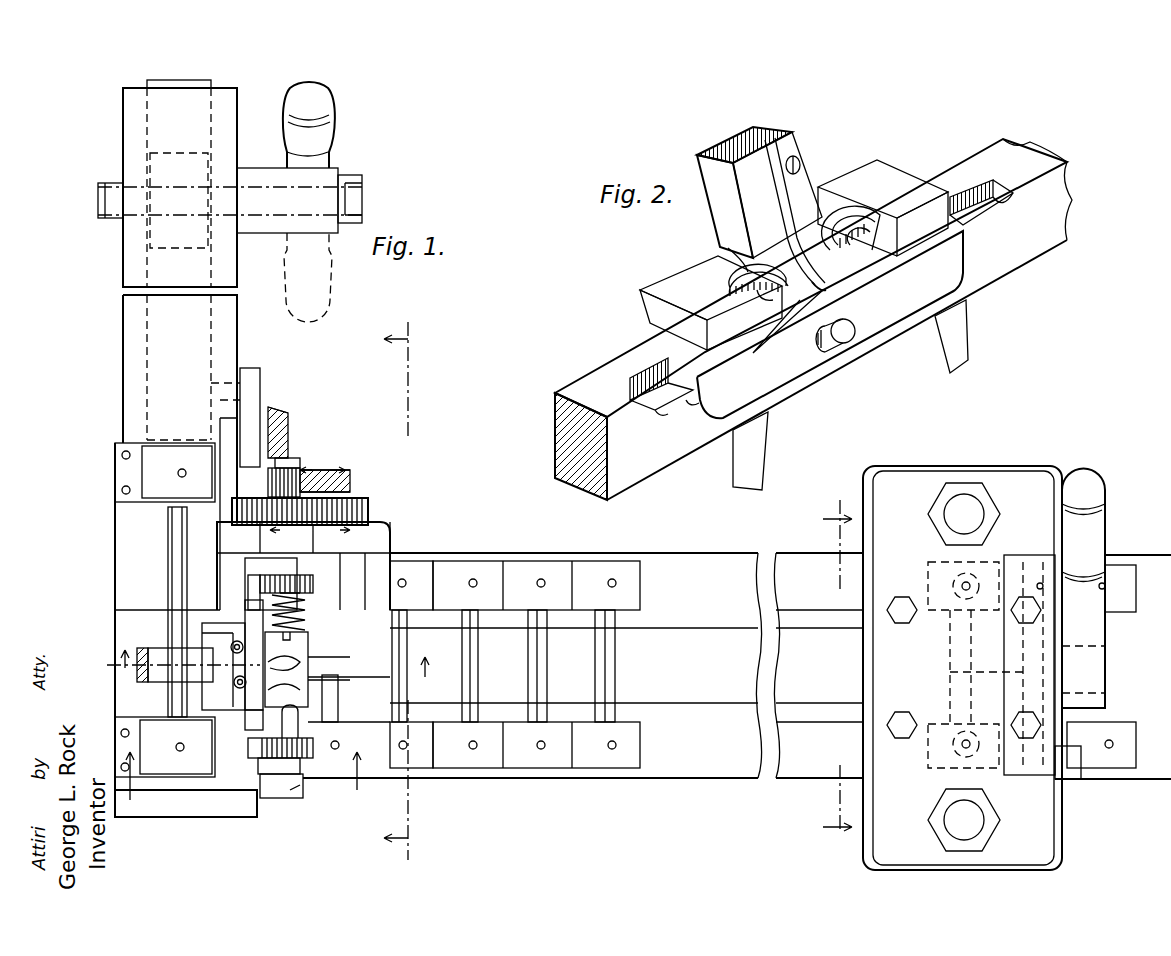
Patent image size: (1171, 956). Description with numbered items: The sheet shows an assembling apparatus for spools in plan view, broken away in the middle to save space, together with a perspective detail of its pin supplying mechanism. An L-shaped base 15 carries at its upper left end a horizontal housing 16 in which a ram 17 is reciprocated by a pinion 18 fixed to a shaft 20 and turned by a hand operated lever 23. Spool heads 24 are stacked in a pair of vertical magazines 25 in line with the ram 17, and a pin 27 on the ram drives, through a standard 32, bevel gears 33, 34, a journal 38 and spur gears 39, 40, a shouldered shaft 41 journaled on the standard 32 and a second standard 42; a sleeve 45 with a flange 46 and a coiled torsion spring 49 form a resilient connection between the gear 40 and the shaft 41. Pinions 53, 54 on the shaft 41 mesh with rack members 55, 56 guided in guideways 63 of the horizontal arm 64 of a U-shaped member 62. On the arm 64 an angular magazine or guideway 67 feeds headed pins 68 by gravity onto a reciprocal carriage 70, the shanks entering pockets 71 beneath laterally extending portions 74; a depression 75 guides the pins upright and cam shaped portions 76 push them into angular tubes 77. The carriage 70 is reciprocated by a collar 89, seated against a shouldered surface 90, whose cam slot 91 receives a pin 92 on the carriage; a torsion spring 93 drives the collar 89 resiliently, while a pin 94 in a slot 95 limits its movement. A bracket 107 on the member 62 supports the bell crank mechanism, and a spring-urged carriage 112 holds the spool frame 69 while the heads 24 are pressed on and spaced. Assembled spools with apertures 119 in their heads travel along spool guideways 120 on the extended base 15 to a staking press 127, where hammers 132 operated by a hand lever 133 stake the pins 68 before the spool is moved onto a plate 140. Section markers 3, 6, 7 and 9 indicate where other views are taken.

In FIG. 1, the L-shaped base 15 is at (106, 533).
In FIG. 1, the horizontal housing or guideway 16 is at (123, 345).
In FIG. 1, the ram 17 is at (222, 318).
In FIG. 1, the pinion 18 is at (160, 250).
In FIG. 1, the shaft 20 is at (150, 182).
In FIG. 1, the hand operated lever 23 is at (333, 127).
In FIG. 1, the spool heads 24 is at (150, 470).
In FIG. 1, the vertical magazines 25 is at (120, 456).
In FIG. 1, the pin 27 is at (262, 382).
In FIG. 1, the standard 32 is at (290, 416).
In FIG. 1, the bevel gear 33 is at (283, 405).
In FIG. 1, the bevel gear 34 is at (350, 484).
In FIG. 1, the journal 38 is at (330, 572).
In FIG. 1, the spur gear 39 is at (368, 506).
In FIG. 1, the gear 40 is at (245, 500).
In FIG. 1, the shouldered shaft 41 is at (260, 578).
In FIG. 1, the standard 42 is at (285, 800).
In FIG. 1, the sleeve 45 is at (300, 462).
In FIG. 1, the flange 46 is at (313, 543).
In FIG. 1, the coiled torsion spring 49 is at (302, 468).
In FIG. 1, the pinion 53 is at (403, 583).
In FIG. 1, the pinion 54 is at (270, 800).
In FIG. 1, the rack member 55 is at (260, 577).
In FIG. 1, the rack member 56 is at (250, 748).
In FIG. 2, the U-shaped member 62 is at (555, 406).
In FIG. 1, the guideways 63 is at (258, 590).
In FIG. 1, the horizontal arm 64 is at (172, 612).
In FIG. 2, the horizontal arm 64 is at (622, 365).
In FIG. 1, the magazine or guideway 67 is at (137, 665).
In FIG. 2, the magazine or guideway 67 is at (703, 170).
In FIG. 2, the headed pins 68 is at (810, 311).
In FIG. 1, the spool frame 69 is at (168, 570).
In FIG. 1, the reciprocal carriage 70 is at (262, 765).
In FIG. 2, the reciprocal carriage 70 is at (797, 380).
In FIG. 1, the pockets 71 is at (278, 668).
In FIG. 2, the pockets 71 is at (755, 340).
In FIG. 1, the laterally extending portions 74 is at (205, 635).
In FIG. 2, the laterally extending portions 74 is at (668, 280).
In FIG. 2, the depression 75 is at (740, 270).
In FIG. 2, the cam shaped end portions 76 is at (742, 300).
In FIG. 1, the angularly disposed tubes 77 is at (232, 670).
In FIG. 2, the angularly disposed tubes 77 is at (745, 470).
In FIG. 1, the collar 89 is at (393, 607).
In FIG. 1, the shouldered surface 90 is at (336, 745).
In FIG. 1, the cam slot 91 is at (300, 660).
In FIG. 1, the pin 92 is at (338, 700).
In FIG. 2, the pin 92 is at (842, 340).
In FIG. 1, the torsion spring 93 is at (300, 604).
In FIG. 1, the pin 94 is at (285, 722).
In FIG. 1, the slot 95 is at (250, 718).
In FIG. 1, the bracket 107 is at (390, 534).
In FIG. 1, the carriage 112 is at (160, 645).
In FIG. 1, the apertures 119 is at (612, 583).
In FIG. 1, the spool guideways 120 is at (695, 703).
In FIG. 1, the staking press 127 is at (935, 487).
In FIG. 1, the hammers 132 is at (964, 586).
In FIG. 1, the hand lever 133 is at (1107, 507).
In FIG. 1, the plate 140 is at (1165, 780).
In FIG. 1, the section line 3 is at (403, 590).
In FIG. 1, the section line 6 is at (248, 794).
In FIG. 1, the section line 7 is at (279, 674).
In FIG. 1, the section line 9 is at (837, 672).